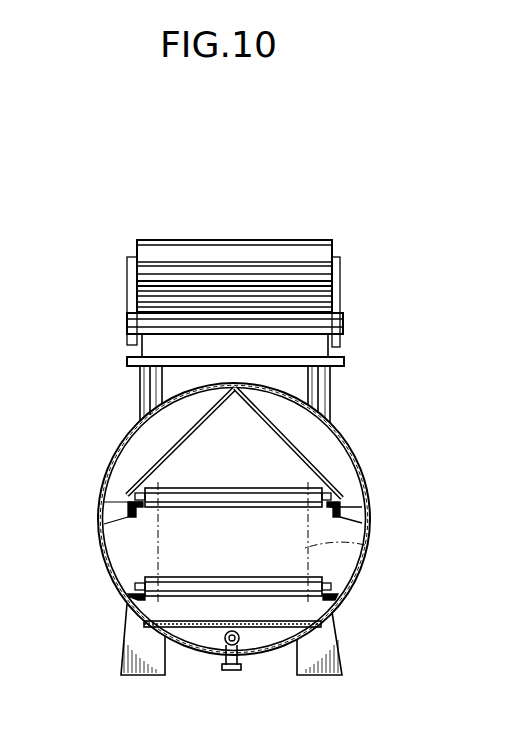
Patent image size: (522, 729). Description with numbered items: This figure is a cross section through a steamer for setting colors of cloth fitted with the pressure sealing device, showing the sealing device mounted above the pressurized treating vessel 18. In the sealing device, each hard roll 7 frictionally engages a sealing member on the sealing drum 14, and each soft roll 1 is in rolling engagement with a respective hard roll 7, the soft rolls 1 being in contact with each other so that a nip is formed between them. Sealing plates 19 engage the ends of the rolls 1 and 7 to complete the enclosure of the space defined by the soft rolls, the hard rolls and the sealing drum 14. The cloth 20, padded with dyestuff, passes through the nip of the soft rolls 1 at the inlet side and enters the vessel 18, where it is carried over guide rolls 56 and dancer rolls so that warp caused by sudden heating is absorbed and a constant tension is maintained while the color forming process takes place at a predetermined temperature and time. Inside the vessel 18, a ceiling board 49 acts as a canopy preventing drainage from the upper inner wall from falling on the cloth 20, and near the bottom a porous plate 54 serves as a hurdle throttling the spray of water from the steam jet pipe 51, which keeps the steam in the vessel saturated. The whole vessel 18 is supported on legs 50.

The soft roll 1 is at (229, 240).
The hard roll 7 is at (138, 296).
The sealing plate 19 is at (131, 257).
The sealing drum 14 is at (128, 328).
The ceiling board 49 is at (185, 435).
The vessel 18 is at (118, 452).
The cloth 20 is at (368, 543).
The guide roll 56 is at (130, 500).
The porous plate 54 is at (160, 625).
The steam jet pipe 51 is at (237, 668).
The leg 50 is at (338, 667).